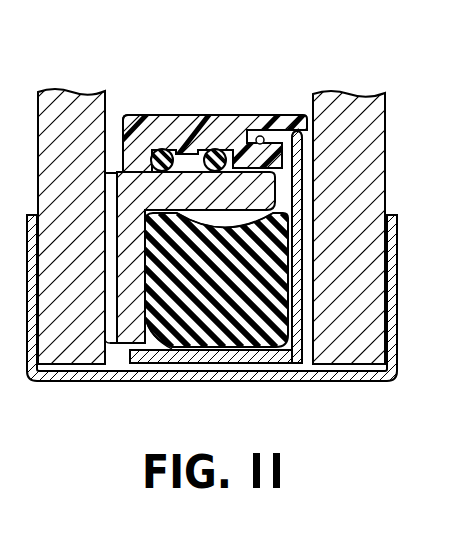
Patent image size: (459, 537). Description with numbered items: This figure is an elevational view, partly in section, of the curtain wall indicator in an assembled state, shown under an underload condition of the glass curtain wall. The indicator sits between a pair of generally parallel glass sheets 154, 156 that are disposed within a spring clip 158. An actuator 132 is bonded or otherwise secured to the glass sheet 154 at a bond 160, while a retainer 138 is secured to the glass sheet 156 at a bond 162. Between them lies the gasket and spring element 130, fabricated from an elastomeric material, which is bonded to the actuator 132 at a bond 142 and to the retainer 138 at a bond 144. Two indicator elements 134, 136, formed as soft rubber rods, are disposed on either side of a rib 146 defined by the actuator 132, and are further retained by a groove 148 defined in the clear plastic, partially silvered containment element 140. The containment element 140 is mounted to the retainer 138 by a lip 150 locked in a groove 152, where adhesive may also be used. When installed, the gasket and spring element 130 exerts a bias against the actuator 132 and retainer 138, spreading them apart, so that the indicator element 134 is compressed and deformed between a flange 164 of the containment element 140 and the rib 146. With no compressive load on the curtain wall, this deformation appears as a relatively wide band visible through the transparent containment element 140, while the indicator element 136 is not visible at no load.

The gasket and spring element 130 is at (238, 312).
The actuator 132 is at (123, 345).
The indicator element 134 is at (153, 153).
The indicator element 136 is at (216, 150).
The retainer 138 is at (305, 268).
The containment element 140 is at (158, 117).
The bond 142 is at (172, 350).
The bond 144 is at (280, 362).
The rib 146 is at (184, 150).
The groove 148 is at (184, 152).
The lip 150 is at (277, 130).
The groove 152 is at (265, 142).
The glass sheet 154 is at (90, 243).
The glass sheet 156 is at (366, 208).
The spring clip 158 is at (50, 382).
The bond 160 is at (110, 195).
The bond 162 is at (300, 313).
The flange 164 is at (130, 126).